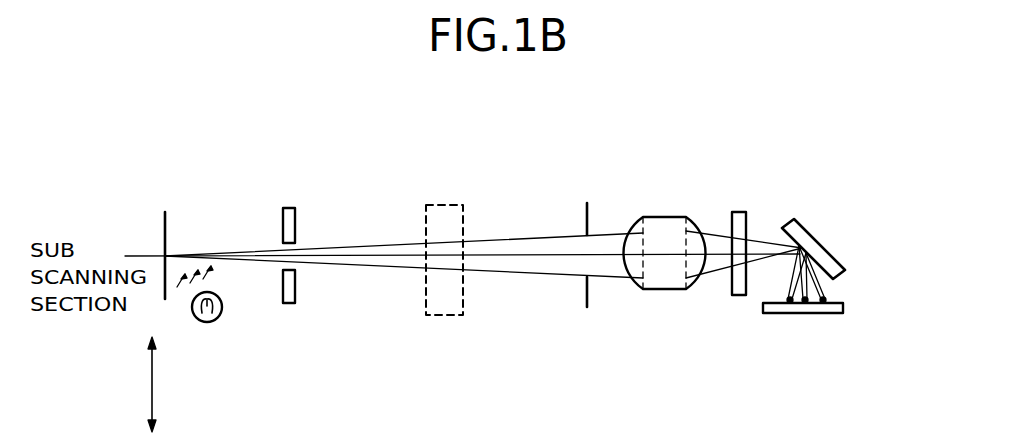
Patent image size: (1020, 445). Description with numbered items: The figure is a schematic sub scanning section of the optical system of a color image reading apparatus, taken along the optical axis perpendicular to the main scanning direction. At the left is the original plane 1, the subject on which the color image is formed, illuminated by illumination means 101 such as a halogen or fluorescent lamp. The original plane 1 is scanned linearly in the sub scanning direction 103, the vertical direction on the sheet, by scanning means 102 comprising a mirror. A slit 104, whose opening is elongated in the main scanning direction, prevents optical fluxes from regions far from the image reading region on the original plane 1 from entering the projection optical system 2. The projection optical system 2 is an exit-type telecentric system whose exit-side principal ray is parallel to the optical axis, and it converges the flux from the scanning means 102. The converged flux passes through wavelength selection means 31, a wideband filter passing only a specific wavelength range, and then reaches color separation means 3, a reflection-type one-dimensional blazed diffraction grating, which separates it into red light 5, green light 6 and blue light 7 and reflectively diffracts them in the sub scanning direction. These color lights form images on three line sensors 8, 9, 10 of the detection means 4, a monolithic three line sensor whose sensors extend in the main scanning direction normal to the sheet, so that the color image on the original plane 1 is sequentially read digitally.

The plane of an original 1 is at (166, 221).
The illumination means 101 is at (220, 316).
The scanning means 102 is at (446, 210).
The sub scanning direction 103 is at (152, 368).
The slit 104 is at (291, 208).
The projection optical system 2 is at (712, 182).
The wavelength selection means 31 is at (739, 212).
The color separation means 3 is at (805, 229).
The detection means 4 is at (840, 313).
The red light 5 is at (790, 288).
The green light 6 is at (805, 314).
The blue light 7 is at (820, 283).
The line sensor 8 is at (790, 314).
The line sensor 9 is at (810, 314).
The line sensor 10 is at (826, 314).